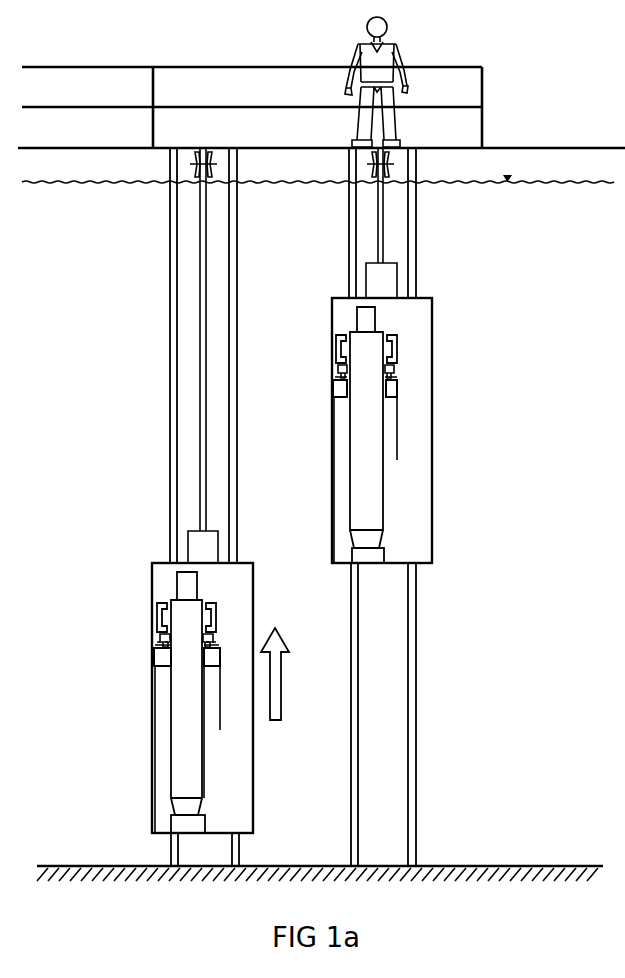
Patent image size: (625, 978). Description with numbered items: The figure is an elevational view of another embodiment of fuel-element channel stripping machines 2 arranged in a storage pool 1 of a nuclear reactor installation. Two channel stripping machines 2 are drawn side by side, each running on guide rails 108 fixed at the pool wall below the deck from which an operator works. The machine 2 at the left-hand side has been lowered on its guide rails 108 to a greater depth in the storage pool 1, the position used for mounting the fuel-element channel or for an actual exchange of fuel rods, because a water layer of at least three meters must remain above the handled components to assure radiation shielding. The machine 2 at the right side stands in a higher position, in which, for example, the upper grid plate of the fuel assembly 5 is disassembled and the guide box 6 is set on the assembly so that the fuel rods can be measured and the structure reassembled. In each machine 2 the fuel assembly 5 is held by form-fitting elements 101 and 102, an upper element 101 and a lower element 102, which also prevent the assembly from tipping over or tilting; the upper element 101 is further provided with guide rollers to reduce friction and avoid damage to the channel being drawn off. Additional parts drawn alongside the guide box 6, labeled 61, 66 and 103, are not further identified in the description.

The storage pool 1 is at (98, 360).
The channel stripping machine 2 is at (254, 768).
The fuel assembly 5 is at (204, 746).
The guide box 6 is at (156, 617).
The bracket 61 is at (217, 608).
The seal 66 is at (160, 637).
The upper form-fitting element 101 is at (211, 668).
The lower form-fitting element 102 is at (176, 826).
The guide element 103 is at (155, 645).
The guide rails 108 is at (169, 383).